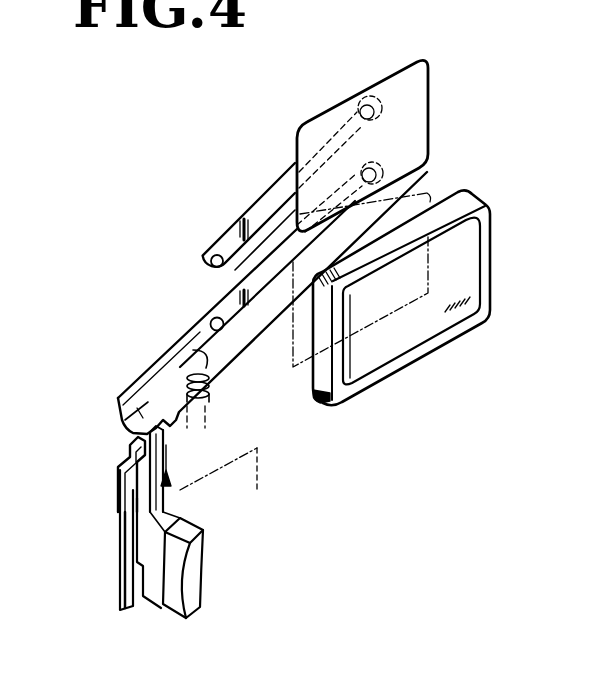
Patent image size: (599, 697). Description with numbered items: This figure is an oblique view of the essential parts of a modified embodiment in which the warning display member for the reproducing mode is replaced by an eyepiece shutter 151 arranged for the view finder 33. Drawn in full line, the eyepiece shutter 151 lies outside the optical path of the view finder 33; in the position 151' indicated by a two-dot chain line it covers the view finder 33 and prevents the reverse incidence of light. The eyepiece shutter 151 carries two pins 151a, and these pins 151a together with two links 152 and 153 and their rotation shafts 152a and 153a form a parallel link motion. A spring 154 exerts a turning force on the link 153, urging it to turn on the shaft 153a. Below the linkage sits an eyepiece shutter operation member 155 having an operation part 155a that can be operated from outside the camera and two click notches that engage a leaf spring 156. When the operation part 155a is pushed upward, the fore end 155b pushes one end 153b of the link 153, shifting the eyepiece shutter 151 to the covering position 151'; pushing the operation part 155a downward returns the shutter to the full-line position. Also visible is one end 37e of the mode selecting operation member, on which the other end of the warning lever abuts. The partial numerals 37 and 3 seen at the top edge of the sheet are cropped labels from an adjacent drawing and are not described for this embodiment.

The eyepiece shutter 151 is at (401, 146).
The pins 151a is at (368, 93).
The two-dot chain line position of eyepiece shutter 151' is at (436, 297).
The link 152 is at (263, 203).
The rotation shaft 152a is at (204, 263).
The link 153 is at (272, 268).
The shaft 153a is at (200, 317).
The end of link 153b is at (137, 411).
The spring 154 is at (213, 399).
The view finder 33 is at (393, 323).
The end of mode selecting operation member 37e is at (177, 442).
The eyepiece shutter operation member 155 is at (150, 589).
The operation part 155a is at (190, 567).
The fore end 155b is at (130, 443).
The leaf spring 156 is at (125, 531).
The housing (partial, adjacent figure) 37 is at (499, 11).
The partial numeral (adjacent figure) 3 is at (594, 11).